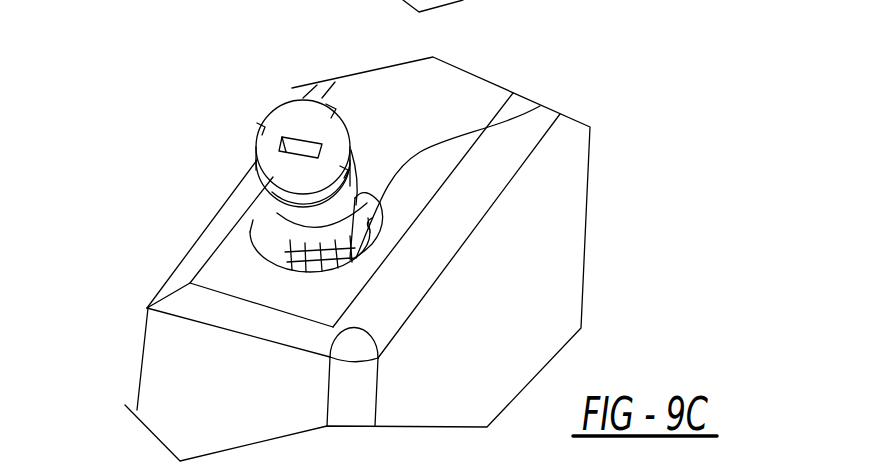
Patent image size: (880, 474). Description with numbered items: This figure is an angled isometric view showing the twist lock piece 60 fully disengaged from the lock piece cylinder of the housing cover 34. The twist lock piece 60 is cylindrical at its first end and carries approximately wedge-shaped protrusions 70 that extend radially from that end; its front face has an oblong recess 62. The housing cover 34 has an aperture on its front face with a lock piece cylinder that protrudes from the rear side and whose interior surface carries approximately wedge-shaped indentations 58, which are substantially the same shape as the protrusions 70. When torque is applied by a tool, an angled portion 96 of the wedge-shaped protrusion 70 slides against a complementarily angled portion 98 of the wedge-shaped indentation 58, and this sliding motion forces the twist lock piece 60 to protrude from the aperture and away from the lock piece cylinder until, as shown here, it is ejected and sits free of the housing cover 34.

The housing cover 34 is at (138, 353).
The wedge-shaped indentations 58 is at (263, 241).
The twist lock piece 60 is at (283, 162).
The oblong recess in the surface of the front face 62 is at (300, 140).
The wedge-shaped protrusions 70 is at (280, 208).
The angled portion 96 is at (350, 260).
The complementarily angled portion 98 is at (540, 106).